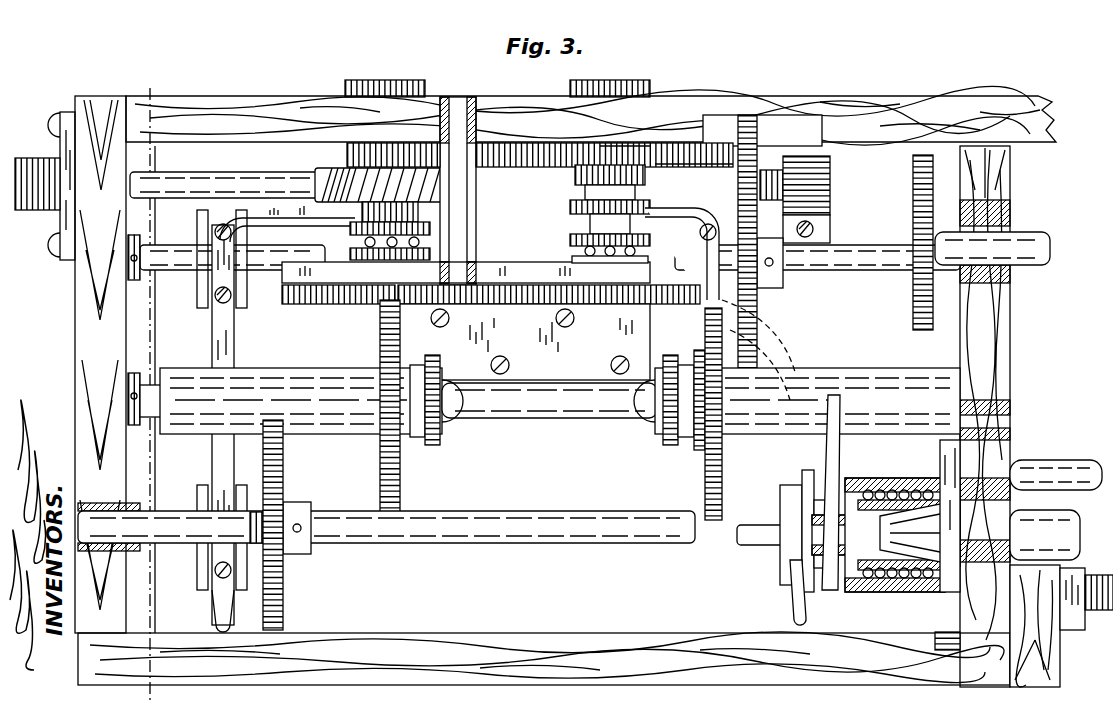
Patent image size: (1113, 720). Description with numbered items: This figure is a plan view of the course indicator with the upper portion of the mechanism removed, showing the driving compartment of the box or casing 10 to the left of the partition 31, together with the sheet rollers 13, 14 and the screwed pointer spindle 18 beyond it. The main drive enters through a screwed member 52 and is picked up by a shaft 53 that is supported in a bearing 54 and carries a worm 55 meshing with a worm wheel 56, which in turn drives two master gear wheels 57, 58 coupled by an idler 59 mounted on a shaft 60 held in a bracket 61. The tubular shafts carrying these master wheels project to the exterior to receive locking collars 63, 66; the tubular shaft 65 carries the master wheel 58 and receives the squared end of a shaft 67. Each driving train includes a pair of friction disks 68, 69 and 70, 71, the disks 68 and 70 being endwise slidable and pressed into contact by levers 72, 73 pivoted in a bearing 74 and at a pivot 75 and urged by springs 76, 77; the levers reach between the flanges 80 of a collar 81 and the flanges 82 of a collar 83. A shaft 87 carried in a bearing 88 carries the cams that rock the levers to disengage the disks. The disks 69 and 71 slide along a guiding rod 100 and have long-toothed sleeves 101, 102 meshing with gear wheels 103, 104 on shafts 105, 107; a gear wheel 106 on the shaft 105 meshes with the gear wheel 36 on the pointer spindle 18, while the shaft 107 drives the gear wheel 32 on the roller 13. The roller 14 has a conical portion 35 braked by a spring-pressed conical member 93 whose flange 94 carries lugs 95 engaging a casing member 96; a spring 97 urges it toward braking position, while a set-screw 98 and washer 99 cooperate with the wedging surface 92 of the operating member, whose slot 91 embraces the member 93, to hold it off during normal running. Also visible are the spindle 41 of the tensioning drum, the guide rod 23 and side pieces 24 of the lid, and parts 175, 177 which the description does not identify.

The box or casing 10 is at (480, 655).
The roller 13 is at (983, 215).
The roller 14 is at (1032, 580).
The screwed spindle 18 is at (1076, 626).
The rectangular guide rod 23 is at (1092, 582).
The side pieces 24 is at (1014, 657).
The partition 31 is at (965, 350).
The gear wheel 32 is at (925, 160).
The conical portion 35 is at (940, 536).
The gear wheel 36 is at (936, 641).
The spindle 41 is at (1062, 470).
The screwed member 52 is at (36, 210).
The shaft 53 is at (180, 186).
The bearing 54 is at (830, 186).
The worm 55 is at (352, 166).
The worm wheel 56 is at (326, 182).
The master gear wheel 57 is at (364, 148).
The master gear wheel 58 is at (612, 163).
The idler 59 is at (485, 150).
The shaft 60 is at (477, 238).
The bracket 61 is at (515, 266).
The locking collar 63 is at (386, 90).
The tubular shaft 65 is at (584, 196).
The locking collar 66 is at (602, 90).
The shaft 67 is at (622, 185).
The friction disk 68 is at (322, 300).
The friction disk 69 is at (384, 344).
The friction disk 70 is at (618, 300).
The friction disk 71 is at (708, 330).
The lever 72 is at (212, 326).
The lever 73 is at (770, 355).
The bearing 74 is at (200, 284).
The pivot 75 is at (702, 242).
The spring 76 is at (216, 614).
The spring 77 is at (794, 612).
The flanges 80 is at (364, 228).
The collar 81 is at (355, 222).
The flanges 82 is at (582, 228).
The collar 83 is at (658, 152).
The shaft 87 is at (738, 540).
The bearing 88 is at (205, 548).
The slot 91 is at (840, 446).
The wedging surface 92 is at (800, 472).
The conical member 93 is at (878, 570).
The flange 94 is at (956, 506).
The lugs 95 is at (946, 492).
The casing member 96 is at (902, 486).
The spring 97 is at (906, 578).
The set-screw 98 is at (790, 546).
The washer 99 is at (812, 512).
The guiding rod 100 is at (128, 394).
The sleeve 101 is at (196, 420).
The sleeve 102 is at (758, 422).
The gear wheel 103 is at (285, 582).
The gear wheel 104 is at (758, 310).
The shaft 105 is at (170, 522).
The gear wheel 106 is at (990, 432).
The shaft 107 is at (150, 262).
The gear 175 is at (424, 440).
The gear 177 is at (672, 440).